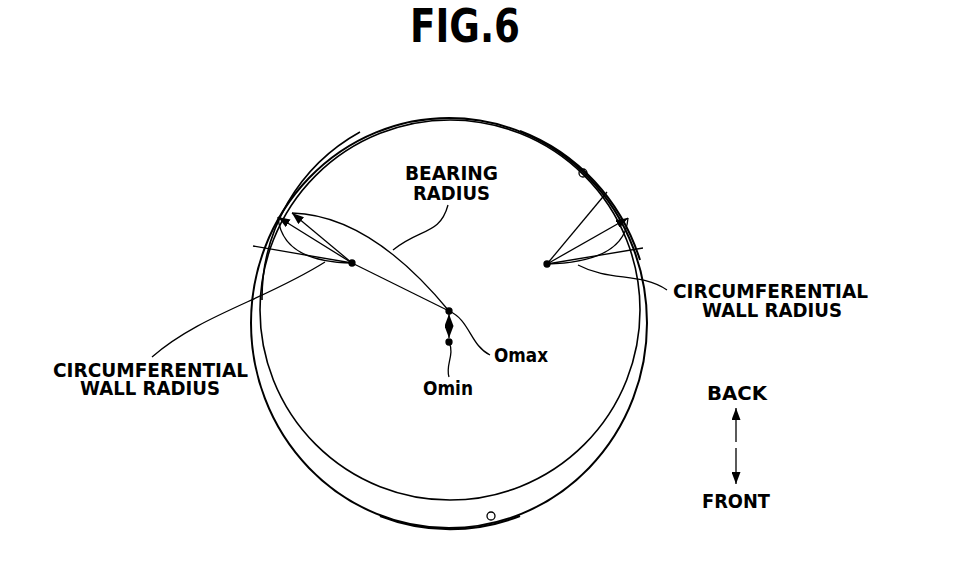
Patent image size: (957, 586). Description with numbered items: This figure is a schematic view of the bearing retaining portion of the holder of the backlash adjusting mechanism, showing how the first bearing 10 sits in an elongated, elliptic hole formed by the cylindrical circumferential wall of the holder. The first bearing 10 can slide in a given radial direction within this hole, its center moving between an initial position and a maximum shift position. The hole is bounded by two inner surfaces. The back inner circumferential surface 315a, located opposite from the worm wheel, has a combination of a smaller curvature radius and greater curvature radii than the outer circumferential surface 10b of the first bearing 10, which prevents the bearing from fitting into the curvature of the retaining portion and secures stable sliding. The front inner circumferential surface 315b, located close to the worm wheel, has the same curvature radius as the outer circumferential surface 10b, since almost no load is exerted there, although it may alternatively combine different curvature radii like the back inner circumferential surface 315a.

The first bearing 10 is at (350, 168).
The outer circumferential surface 10b is at (305, 183).
The back inner circumferential surface 315a is at (585, 169).
The front inner circumferential surface 315b is at (495, 518).